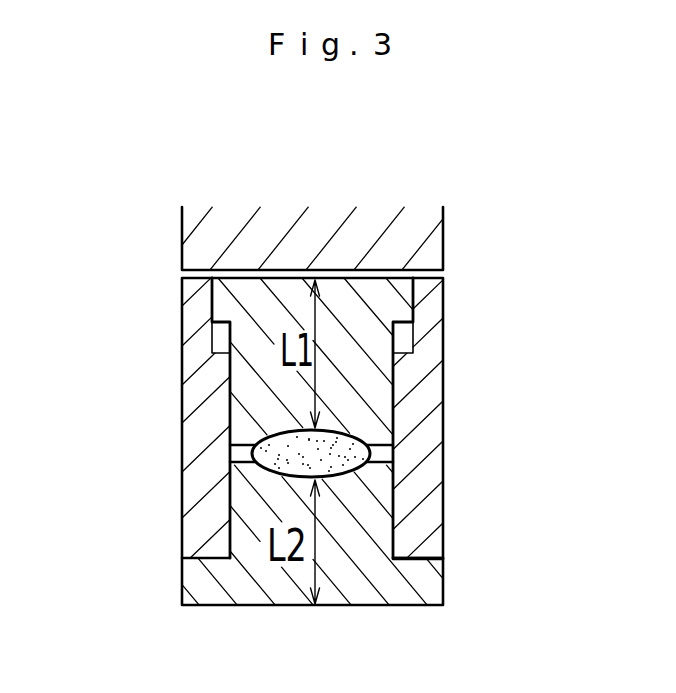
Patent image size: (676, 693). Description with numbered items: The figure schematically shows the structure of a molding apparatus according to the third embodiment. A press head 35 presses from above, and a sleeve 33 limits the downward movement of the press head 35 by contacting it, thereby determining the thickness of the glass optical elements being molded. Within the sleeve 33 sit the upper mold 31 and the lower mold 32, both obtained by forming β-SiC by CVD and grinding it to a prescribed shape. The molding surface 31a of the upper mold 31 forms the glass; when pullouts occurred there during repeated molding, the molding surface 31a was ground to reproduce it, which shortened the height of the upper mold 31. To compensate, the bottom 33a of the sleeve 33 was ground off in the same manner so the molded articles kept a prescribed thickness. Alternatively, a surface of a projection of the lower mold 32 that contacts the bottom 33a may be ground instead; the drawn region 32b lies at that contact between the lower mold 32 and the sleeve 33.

The press head 35 is at (427, 233).
The sleeve 33 is at (207, 410).
The upper mold 31 is at (373, 380).
The molding surface 31a is at (372, 438).
The lower mold 32 is at (265, 517).
The bottom of the sleeve 33a is at (418, 556).
The top face of base 32b is at (418, 558).